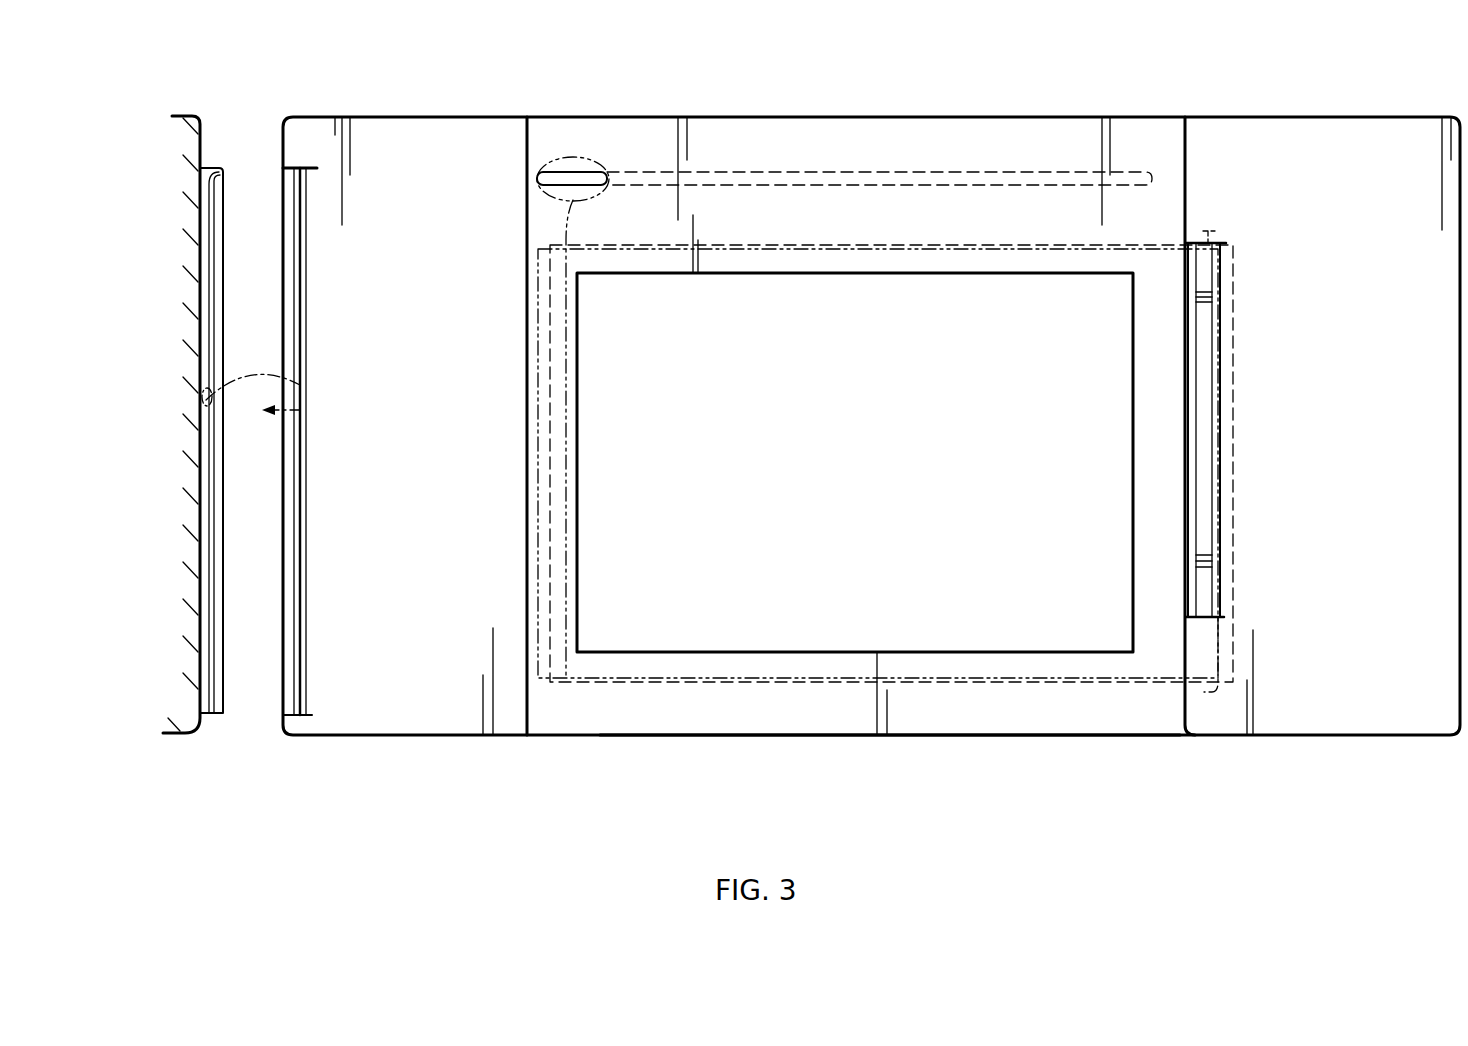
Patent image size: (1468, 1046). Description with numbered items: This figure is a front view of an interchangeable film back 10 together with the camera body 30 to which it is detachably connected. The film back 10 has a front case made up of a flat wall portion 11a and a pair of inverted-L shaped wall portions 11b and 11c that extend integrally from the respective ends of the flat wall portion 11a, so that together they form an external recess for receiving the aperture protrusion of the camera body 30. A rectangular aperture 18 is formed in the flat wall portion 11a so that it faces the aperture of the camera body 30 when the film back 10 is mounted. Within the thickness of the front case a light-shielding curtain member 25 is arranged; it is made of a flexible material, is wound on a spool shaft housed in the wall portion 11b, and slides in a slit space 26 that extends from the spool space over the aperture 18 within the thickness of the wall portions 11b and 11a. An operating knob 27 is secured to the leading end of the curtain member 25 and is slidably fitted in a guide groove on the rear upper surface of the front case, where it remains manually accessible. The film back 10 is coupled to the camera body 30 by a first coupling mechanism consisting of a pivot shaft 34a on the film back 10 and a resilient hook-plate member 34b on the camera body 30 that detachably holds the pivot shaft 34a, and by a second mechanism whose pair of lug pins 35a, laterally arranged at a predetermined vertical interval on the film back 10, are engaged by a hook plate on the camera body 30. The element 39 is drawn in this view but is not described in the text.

The interchangeable film back 10 is at (1285, 103).
The flat wall portion 11a is at (977, 738).
The inverted-L shaped wall portion 11b is at (1315, 690).
The inverted-L shaped wall portion 11c is at (410, 688).
The rectangular aperture 18 is at (660, 642).
The light-shielding curtain member 25 is at (880, 224).
The slit space 26 is at (942, 258).
The operating knob 27 is at (585, 150).
The camera body 30 is at (190, 103).
The pivot shaft 34a is at (290, 512).
The resilient hook-plate member 34b is at (210, 270).
The lug pins 35a is at (1205, 302).
The lock member 39 is at (1214, 700).